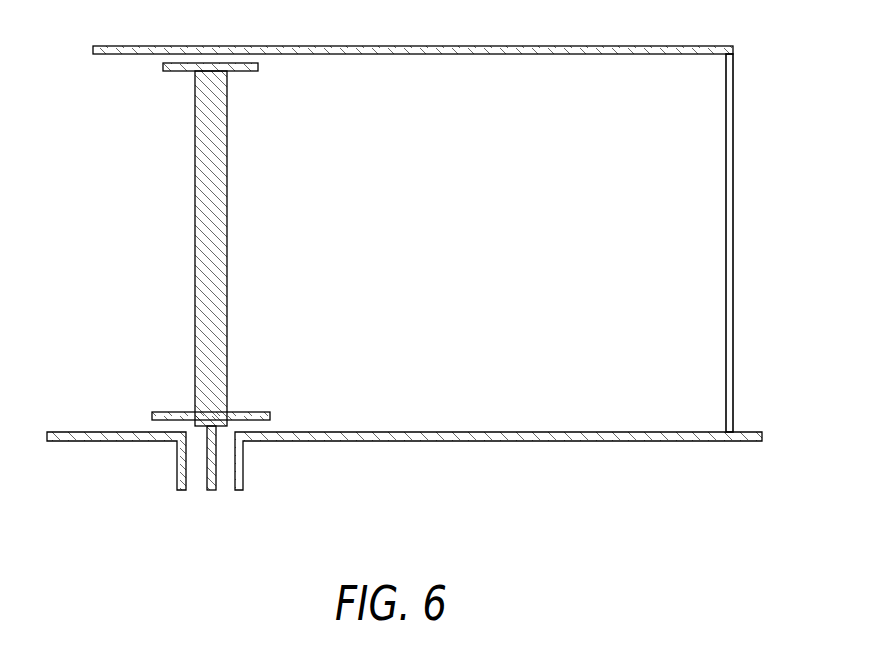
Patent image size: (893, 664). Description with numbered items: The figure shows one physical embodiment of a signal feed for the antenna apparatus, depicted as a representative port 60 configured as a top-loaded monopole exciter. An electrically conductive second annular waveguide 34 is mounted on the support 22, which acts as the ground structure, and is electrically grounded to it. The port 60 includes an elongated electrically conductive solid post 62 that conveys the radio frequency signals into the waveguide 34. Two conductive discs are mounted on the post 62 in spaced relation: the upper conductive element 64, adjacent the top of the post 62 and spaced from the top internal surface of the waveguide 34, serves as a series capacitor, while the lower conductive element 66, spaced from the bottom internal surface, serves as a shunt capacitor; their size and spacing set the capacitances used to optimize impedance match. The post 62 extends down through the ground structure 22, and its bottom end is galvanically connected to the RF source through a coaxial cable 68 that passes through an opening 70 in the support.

The support 22 is at (58, 431).
The second annular waveguide 34 is at (524, 61).
The port 60 is at (124, 198).
The post 62 is at (227, 212).
The upper conductive element 64 is at (251, 72).
The lower conductive element 66 is at (253, 413).
The coaxial cable 68 is at (208, 482).
The opening / channel 70 is at (228, 494).